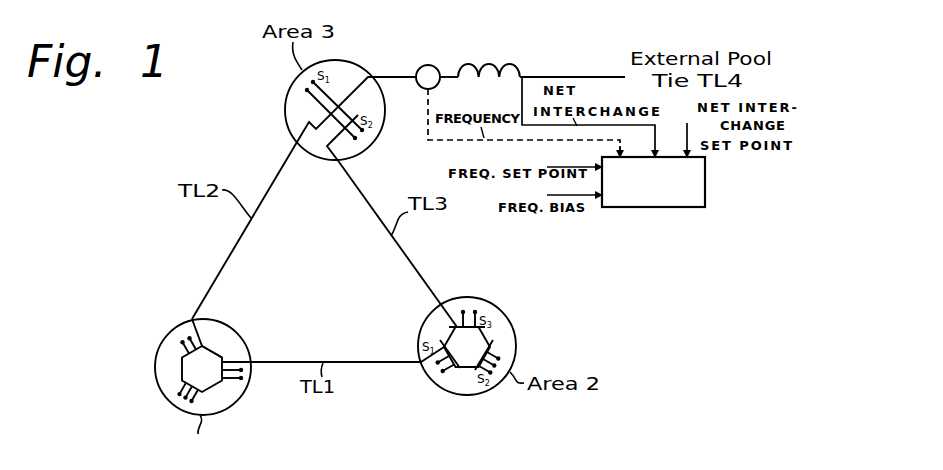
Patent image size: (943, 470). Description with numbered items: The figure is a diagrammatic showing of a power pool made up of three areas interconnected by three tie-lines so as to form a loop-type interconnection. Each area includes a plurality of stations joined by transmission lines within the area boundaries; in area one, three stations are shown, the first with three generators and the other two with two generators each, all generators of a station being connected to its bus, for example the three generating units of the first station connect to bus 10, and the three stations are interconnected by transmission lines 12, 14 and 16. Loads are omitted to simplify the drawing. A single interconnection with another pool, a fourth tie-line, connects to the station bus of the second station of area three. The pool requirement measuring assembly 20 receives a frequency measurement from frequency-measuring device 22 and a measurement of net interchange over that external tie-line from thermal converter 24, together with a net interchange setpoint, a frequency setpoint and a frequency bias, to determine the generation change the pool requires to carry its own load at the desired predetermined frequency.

The bus 10 is at (187, 373).
The transmission line 12 is at (218, 388).
The transmission line 14 is at (182, 368).
The transmission line 16 is at (210, 348).
The pool requirement measuring assembly 20 is at (705, 178).
The frequency-measuring device 22 is at (420, 64).
The thermal converter 24 is at (520, 73).